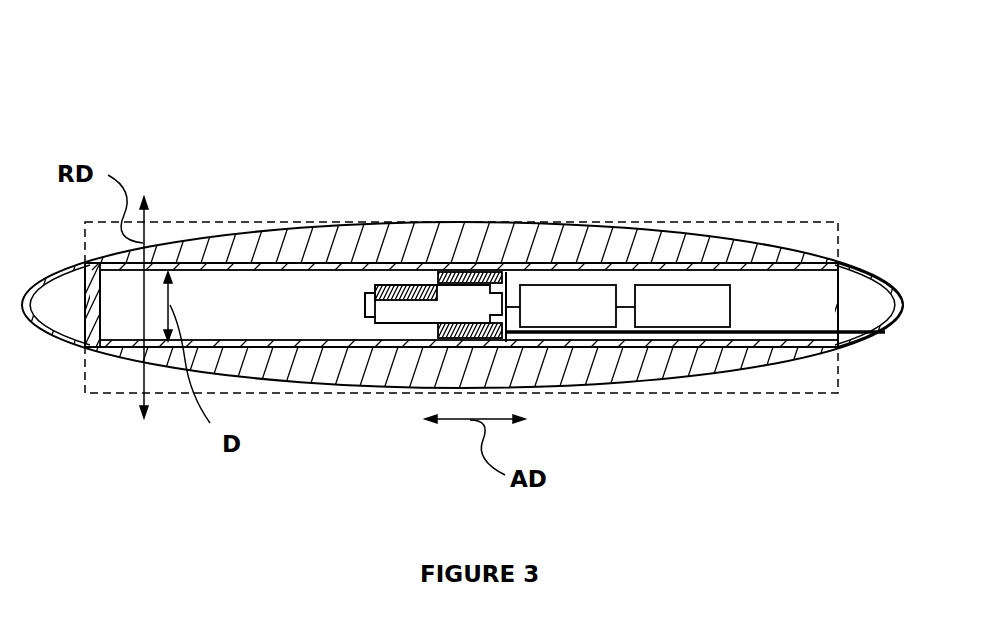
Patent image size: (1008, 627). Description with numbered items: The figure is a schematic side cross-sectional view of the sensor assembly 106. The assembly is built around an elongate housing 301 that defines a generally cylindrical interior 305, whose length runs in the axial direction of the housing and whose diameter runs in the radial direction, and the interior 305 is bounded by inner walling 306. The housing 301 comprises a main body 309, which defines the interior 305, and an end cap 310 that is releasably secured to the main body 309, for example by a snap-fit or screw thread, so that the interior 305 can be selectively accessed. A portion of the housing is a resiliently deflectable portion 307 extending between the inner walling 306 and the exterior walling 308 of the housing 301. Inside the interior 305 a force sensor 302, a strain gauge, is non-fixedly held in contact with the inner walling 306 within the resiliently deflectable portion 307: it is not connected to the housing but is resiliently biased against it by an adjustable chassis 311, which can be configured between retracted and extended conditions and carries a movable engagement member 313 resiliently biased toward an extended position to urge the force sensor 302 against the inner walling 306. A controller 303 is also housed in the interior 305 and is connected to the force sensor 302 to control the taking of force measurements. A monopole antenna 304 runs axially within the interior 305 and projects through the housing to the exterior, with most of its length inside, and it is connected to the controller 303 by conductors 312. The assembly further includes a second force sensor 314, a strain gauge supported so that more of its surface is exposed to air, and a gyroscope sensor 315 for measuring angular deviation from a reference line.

The sensor assembly 106 is at (680, 82).
The housing 301 is at (263, 232).
The force sensor 302 is at (458, 270).
The controller 303 is at (591, 323).
The antenna 304 is at (652, 337).
The interior 305 is at (258, 318).
The inner walling 306 is at (118, 278).
The resiliently deflectable portion 307 is at (717, 221).
The exterior walling 308 is at (650, 226).
The main body 309 is at (732, 378).
The end cap 310 is at (861, 265).
The adjustable chassis 311 is at (433, 310).
The conductors 312 is at (367, 284).
The movable engagement member 313 is at (510, 307).
The second force sensor 314 is at (403, 284).
The gyroscope sensor 315 is at (705, 323).